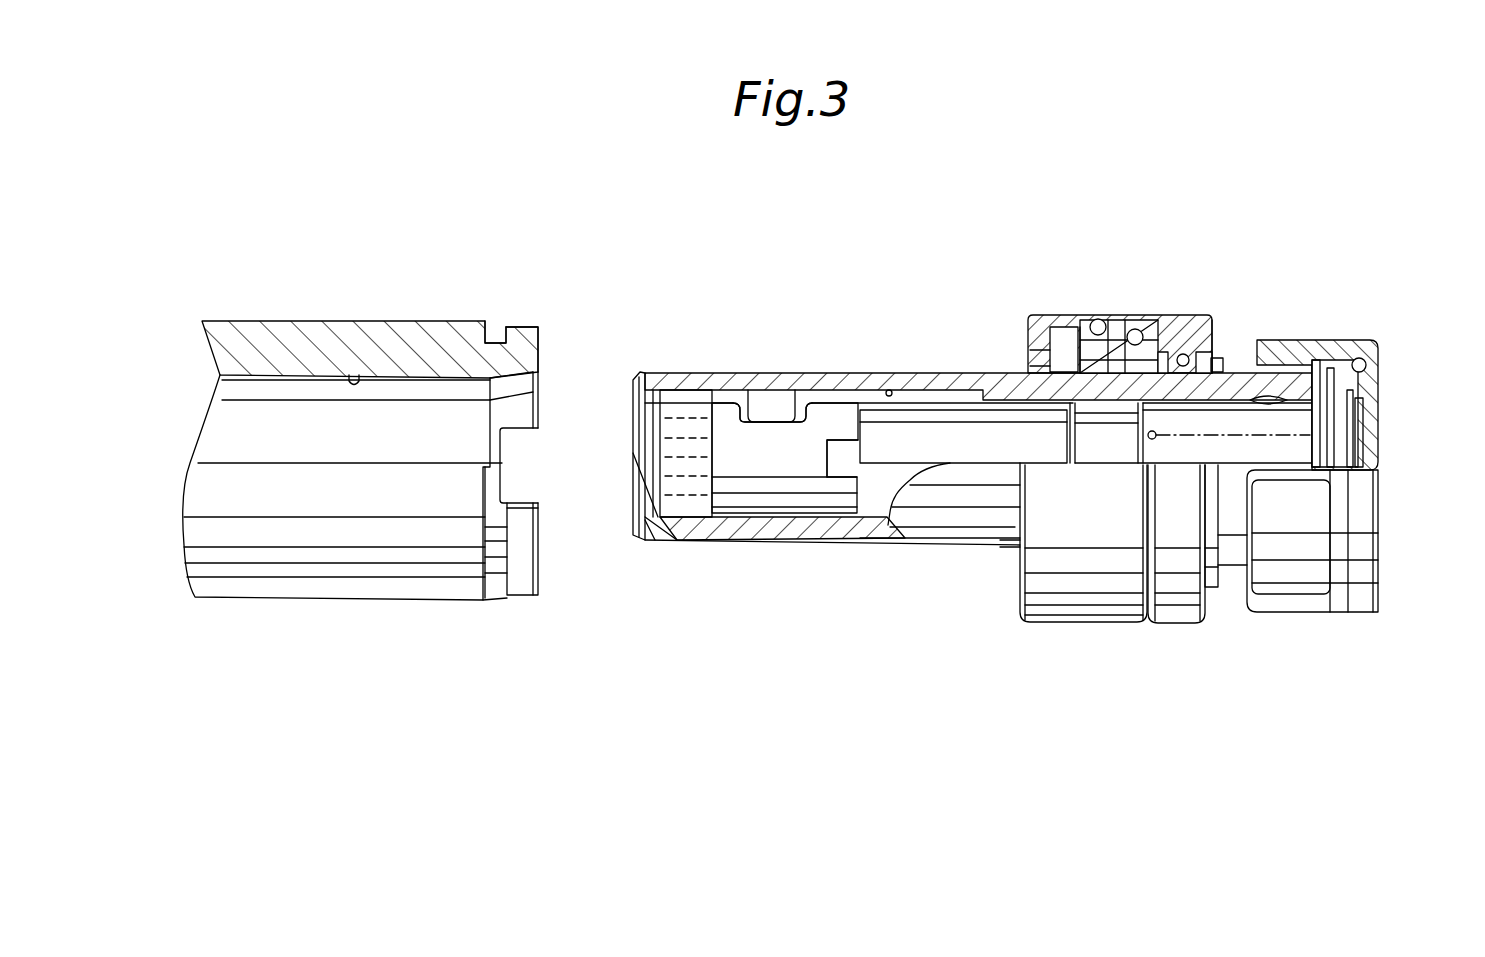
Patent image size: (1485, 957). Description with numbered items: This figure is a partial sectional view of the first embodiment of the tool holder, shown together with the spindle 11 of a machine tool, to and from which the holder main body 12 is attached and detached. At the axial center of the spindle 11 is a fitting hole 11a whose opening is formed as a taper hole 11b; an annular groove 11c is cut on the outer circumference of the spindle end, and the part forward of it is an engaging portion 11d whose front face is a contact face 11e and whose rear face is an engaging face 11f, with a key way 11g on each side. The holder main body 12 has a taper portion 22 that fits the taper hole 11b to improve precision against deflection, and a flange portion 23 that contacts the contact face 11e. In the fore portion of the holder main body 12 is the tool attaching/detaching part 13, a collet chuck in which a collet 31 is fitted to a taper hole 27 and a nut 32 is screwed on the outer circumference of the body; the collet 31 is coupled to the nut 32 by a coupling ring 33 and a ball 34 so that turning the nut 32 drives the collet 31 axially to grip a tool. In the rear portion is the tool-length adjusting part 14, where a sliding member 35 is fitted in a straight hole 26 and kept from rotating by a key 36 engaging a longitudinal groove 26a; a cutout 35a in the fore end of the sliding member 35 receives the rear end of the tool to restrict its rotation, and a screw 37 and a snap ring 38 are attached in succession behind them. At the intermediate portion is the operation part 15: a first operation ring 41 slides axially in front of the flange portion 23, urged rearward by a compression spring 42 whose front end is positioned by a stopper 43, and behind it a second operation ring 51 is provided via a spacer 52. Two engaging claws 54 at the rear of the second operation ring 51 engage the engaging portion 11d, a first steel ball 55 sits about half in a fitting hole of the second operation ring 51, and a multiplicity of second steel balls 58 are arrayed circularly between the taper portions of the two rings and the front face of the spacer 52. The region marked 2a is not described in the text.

The chuck body 2a is at (908, 530).
The spindle 11 is at (288, 325).
The fitting hole 11a is at (356, 380).
The taper hole 11b is at (537, 375).
The annular groove 11c is at (493, 333).
The engaging portion 11d is at (530, 333).
The contact face 11e is at (538, 575).
The engaging face 11f is at (504, 591).
The key way 11g is at (523, 433).
The holder main body 12 is at (965, 375).
The tool attaching/detaching part 13 is at (1372, 318).
The tool-length adjusting part 14 is at (742, 396).
The operation part 15 is at (1154, 280).
The taper portion 22 is at (1040, 370).
The flange portion 23 is at (1050, 323).
The straight hole 26 is at (937, 410).
The longitudinal groove 26a is at (889, 390).
The taper hole 27 is at (1310, 363).
The collet 31 is at (1363, 455).
The nut 32 is at (1343, 343).
The coupling ring 33 is at (1380, 393).
The ball 34 is at (1378, 372).
The sliding member 35 is at (833, 410).
The cutout 35a is at (833, 447).
The key 36 is at (768, 406).
The screw 37 is at (694, 410).
The snap ring 38 is at (640, 374).
The first operation ring 41 is at (1193, 343).
The compression spring 42 is at (1213, 357).
The stopper 43 is at (1220, 358).
The second operation ring 51 is at (1120, 323).
The spacer 52 is at (1080, 327).
The engaging claw 54 is at (1028, 320).
The first steel ball 55 is at (1097, 319).
The second steel ball 58 is at (1143, 330).